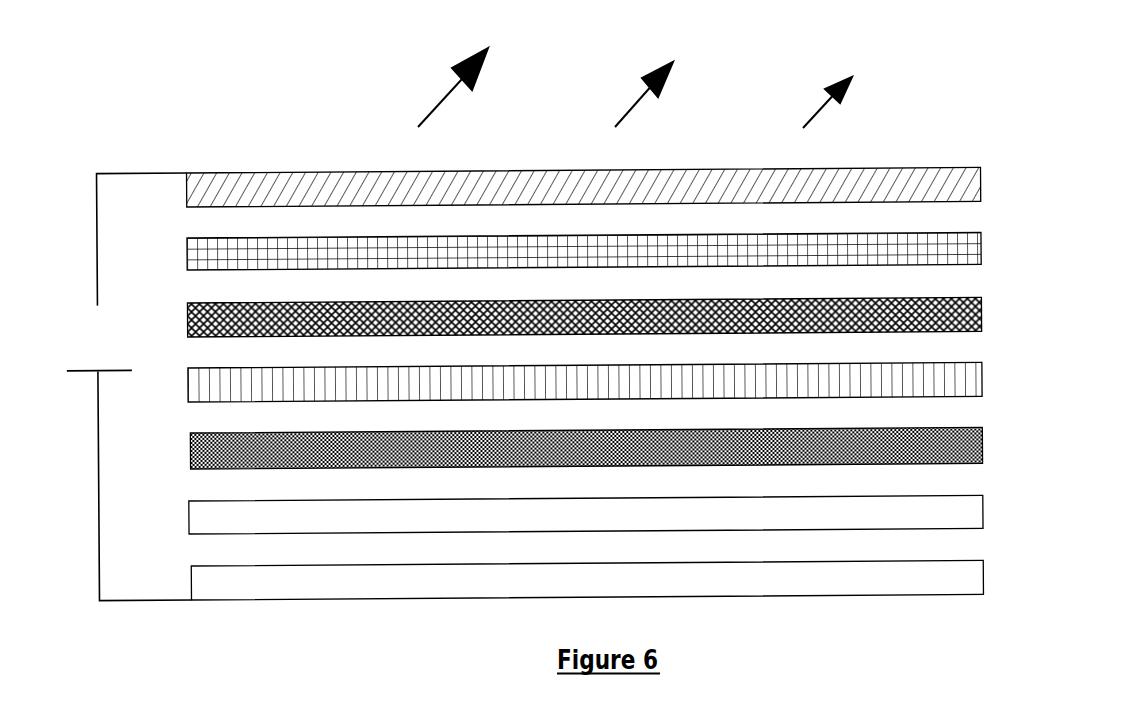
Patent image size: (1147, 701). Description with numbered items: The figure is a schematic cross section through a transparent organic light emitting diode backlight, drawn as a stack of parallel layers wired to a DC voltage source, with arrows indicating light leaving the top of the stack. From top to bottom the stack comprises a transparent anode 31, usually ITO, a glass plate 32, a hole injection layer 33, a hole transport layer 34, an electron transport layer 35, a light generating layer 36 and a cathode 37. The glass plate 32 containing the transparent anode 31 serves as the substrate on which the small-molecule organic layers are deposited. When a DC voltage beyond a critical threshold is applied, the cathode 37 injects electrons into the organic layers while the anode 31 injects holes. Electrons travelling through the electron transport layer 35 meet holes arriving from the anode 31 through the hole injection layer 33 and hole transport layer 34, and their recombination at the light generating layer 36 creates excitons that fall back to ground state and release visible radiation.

The transparent anode 31 is at (982, 173).
The glass plate 32 is at (982, 238).
The hole injection layer 33 is at (982, 303).
The hole transport layer 34 is at (982, 368).
The electron transport layer 35 is at (982, 433).
The light generating layer 36 is at (982, 501).
The cathode 37 is at (982, 566).